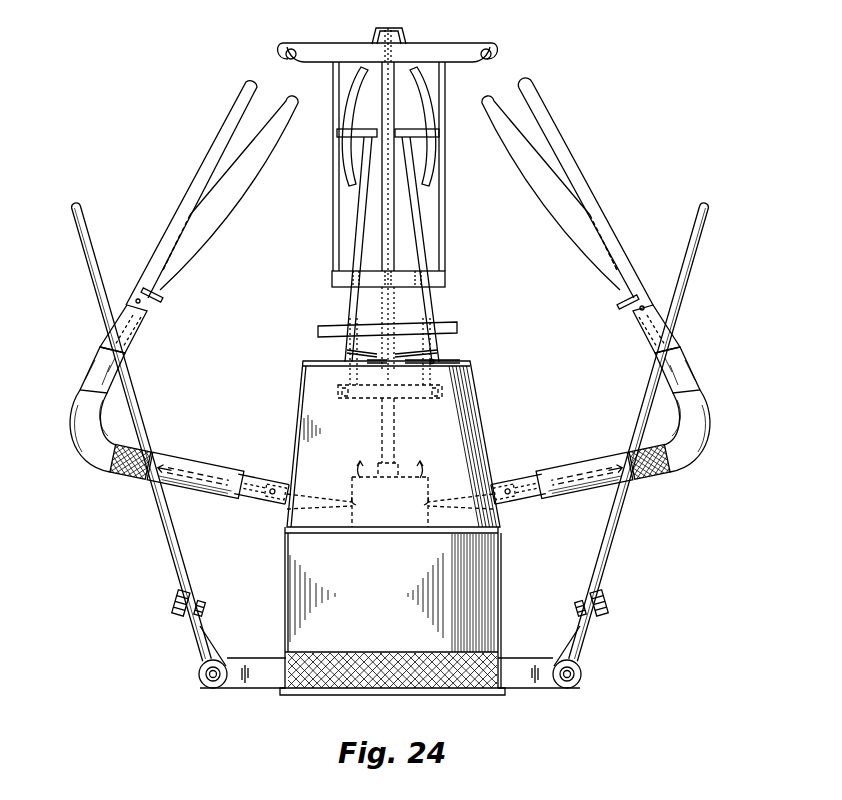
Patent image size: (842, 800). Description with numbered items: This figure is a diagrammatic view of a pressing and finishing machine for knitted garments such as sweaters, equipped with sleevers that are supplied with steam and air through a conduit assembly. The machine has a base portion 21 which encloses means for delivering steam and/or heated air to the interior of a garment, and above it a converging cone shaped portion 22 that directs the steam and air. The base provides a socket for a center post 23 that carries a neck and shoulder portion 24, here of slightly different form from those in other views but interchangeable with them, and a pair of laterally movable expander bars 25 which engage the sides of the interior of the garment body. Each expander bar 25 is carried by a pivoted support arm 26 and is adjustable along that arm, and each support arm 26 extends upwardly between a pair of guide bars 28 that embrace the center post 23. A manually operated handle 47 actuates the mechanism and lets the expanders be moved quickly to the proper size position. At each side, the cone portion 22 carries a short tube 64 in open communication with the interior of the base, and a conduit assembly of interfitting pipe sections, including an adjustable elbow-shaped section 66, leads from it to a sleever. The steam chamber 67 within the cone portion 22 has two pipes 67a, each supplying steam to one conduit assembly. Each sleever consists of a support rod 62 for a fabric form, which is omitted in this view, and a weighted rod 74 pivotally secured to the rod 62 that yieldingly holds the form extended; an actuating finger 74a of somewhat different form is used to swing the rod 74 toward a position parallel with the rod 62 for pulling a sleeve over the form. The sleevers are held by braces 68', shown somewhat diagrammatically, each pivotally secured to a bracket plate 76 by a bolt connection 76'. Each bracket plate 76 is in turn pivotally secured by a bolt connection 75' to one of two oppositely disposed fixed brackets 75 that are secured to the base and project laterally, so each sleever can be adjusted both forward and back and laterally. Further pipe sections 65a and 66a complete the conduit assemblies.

The base portion 21 is at (501, 598).
The cone shaped portion 22 is at (481, 420).
The center post 23 is at (383, 304).
The neck and shoulder portion 24 is at (447, 43).
The expander bars 25 is at (437, 177).
The support arms 26 is at (430, 299).
The guide bars 28 is at (458, 333).
The handle 47 is at (432, 365).
The support rod 62 is at (222, 150).
The short tube 64 is at (283, 512).
The tube 65a is at (227, 462).
The elbow-shaped section 66 is at (80, 447).
The coupling 66a is at (140, 480).
The steam chamber 67 is at (352, 489).
The pipes 67a is at (429, 492).
The braces 68' is at (390, 432).
The weighted rod 74 is at (223, 220).
The actuating finger 74a is at (162, 296).
The fixed brackets 75 is at (390, 688).
The bolt connection 75' is at (394, 687).
The bracket plate 76 is at (394, 647).
The bolt connection 76' is at (392, 609).